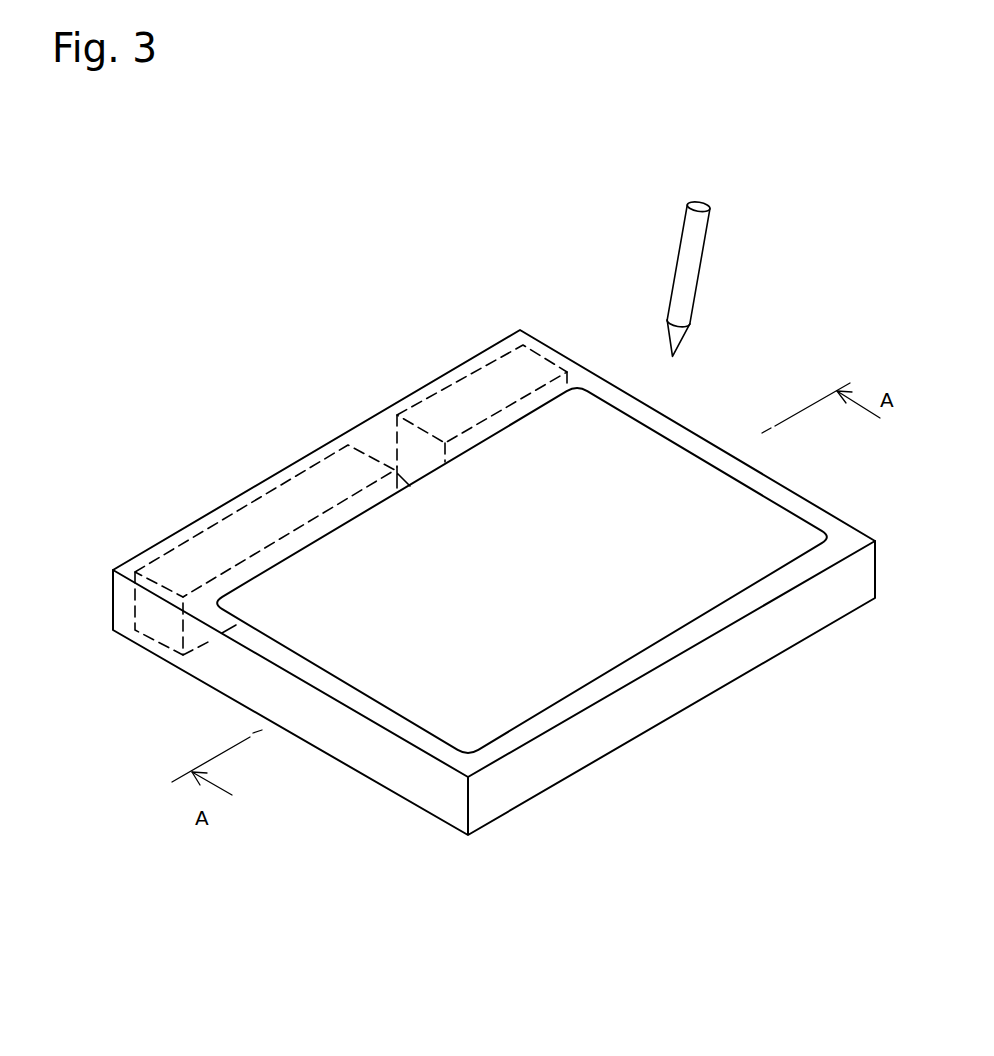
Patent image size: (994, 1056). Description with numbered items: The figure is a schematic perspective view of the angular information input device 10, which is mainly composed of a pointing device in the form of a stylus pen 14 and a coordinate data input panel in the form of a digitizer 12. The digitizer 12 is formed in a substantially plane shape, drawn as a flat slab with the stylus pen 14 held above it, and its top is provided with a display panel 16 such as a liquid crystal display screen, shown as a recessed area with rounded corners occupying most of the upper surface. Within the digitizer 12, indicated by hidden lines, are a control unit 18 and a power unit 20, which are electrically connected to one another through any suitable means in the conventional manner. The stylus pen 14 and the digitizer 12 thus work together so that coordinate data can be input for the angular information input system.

The angular information input device 10 is at (497, 318).
The digitizer 12 is at (628, 753).
The stylus pen 14 is at (685, 265).
The display panel 16 is at (697, 593).
The control unit 18 is at (272, 507).
The power unit 20 is at (473, 388).